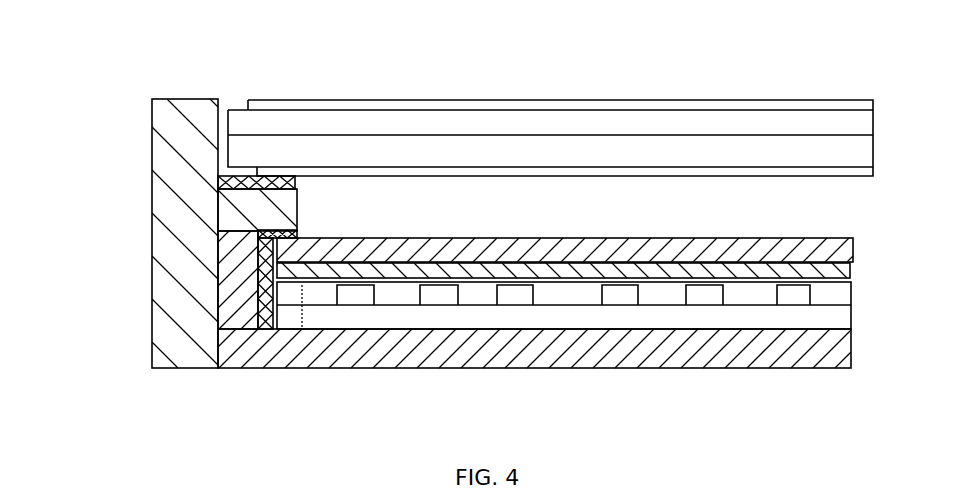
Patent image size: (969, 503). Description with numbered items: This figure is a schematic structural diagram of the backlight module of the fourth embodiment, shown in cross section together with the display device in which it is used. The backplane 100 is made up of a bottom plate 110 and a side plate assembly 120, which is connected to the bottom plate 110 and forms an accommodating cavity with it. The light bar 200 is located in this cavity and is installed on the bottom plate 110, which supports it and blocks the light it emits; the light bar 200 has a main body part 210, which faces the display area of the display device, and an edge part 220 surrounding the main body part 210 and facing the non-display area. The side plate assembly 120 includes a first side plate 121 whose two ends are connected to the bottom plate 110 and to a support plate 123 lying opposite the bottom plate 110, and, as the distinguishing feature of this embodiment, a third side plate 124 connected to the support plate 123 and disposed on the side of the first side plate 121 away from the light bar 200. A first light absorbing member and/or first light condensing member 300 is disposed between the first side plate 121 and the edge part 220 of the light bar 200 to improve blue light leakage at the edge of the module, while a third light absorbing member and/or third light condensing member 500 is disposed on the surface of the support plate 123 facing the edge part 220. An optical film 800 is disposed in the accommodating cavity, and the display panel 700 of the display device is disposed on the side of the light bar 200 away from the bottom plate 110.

The backplane 100 is at (444, 228).
The bottom plate 110 is at (534, 194).
The side plate assembly 120 is at (209, 209).
The first side plate 121 is at (227, 308).
The support plate 123 is at (237, 207).
The third side plate 124 is at (197, 265).
The light bar 200 is at (564, 365).
The main body part 210 is at (408, 295).
The edge part 220 is at (292, 292).
The first light absorbing member and/or first light condensing member 300 is at (270, 315).
The third light absorbing member and/or third light condensing member 500 is at (289, 230).
The display panel 700 is at (462, 152).
The optical film 800 is at (790, 253).